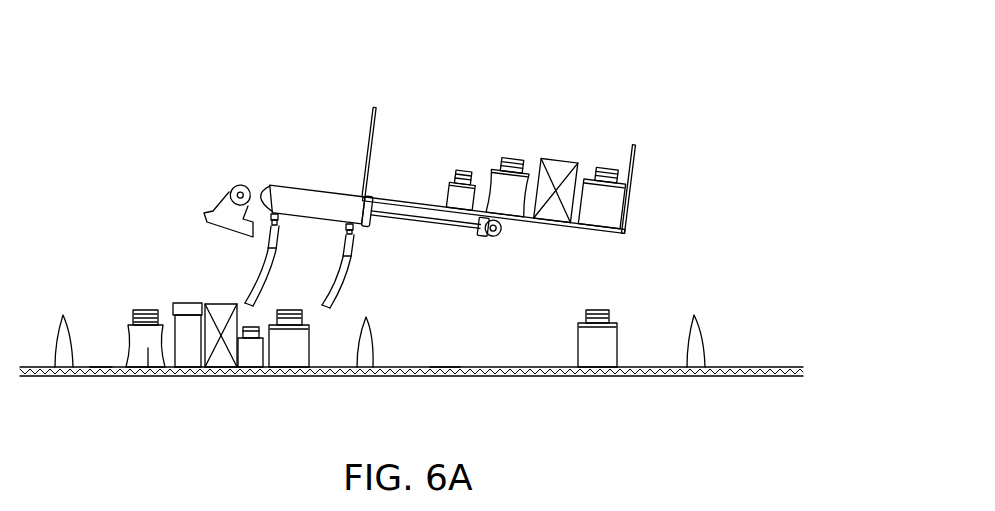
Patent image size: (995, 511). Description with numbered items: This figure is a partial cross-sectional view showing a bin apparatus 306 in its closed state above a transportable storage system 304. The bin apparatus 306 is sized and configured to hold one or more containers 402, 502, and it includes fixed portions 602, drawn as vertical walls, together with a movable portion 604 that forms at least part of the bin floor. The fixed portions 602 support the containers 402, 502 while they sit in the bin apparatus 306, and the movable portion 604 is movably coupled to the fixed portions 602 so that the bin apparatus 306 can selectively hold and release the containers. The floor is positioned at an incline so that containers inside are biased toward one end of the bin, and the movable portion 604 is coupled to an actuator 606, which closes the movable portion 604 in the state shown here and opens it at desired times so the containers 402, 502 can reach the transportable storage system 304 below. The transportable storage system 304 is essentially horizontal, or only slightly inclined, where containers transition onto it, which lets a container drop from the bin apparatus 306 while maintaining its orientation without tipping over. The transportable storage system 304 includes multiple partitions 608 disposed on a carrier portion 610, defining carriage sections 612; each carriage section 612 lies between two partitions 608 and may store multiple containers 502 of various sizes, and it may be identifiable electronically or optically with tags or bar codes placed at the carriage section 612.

The transportable storage system 304 is at (730, 367).
The bin apparatus 306 is at (696, 117).
The container 402 is at (603, 205).
The container 502 is at (292, 358).
The fixed portion 602 is at (372, 147).
The movable portion 604 is at (610, 238).
The actuator 606 is at (270, 185).
The partition 608 is at (69, 318).
The carrier portion 610 is at (100, 367).
The carriage section 612 is at (443, 347).